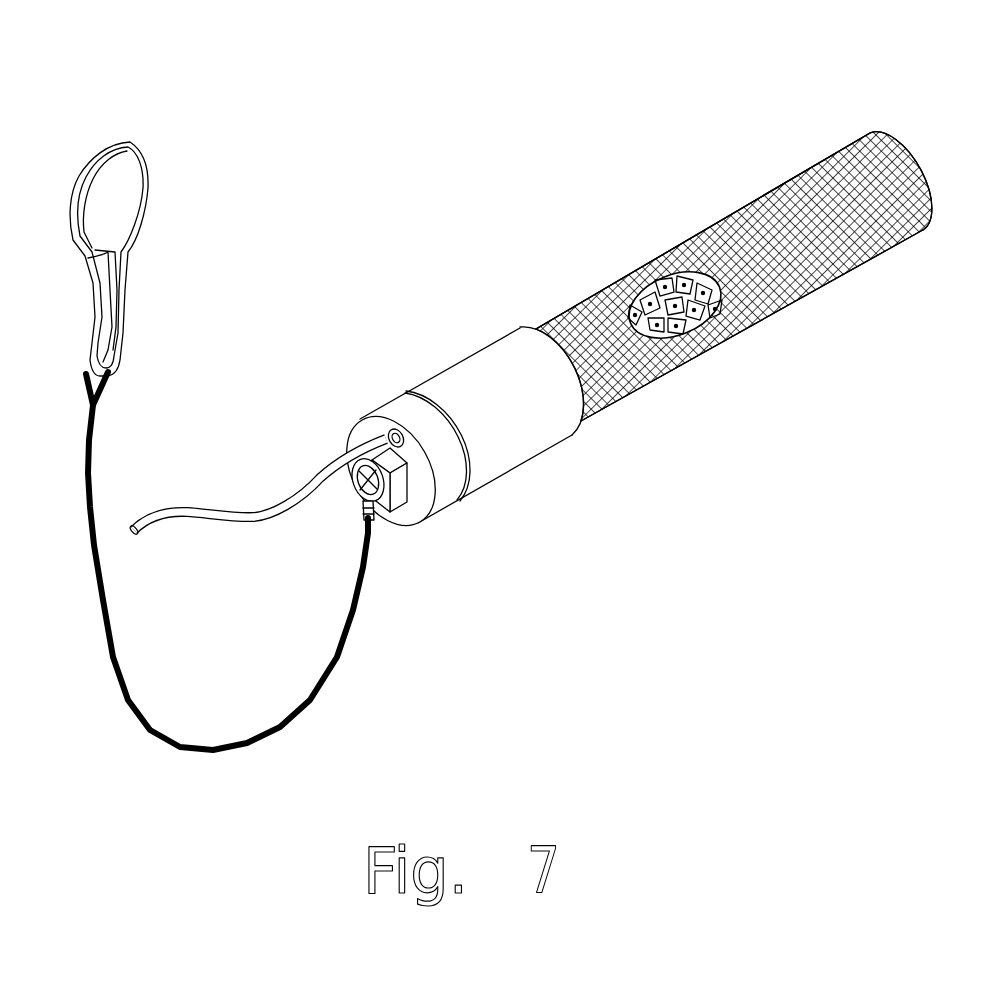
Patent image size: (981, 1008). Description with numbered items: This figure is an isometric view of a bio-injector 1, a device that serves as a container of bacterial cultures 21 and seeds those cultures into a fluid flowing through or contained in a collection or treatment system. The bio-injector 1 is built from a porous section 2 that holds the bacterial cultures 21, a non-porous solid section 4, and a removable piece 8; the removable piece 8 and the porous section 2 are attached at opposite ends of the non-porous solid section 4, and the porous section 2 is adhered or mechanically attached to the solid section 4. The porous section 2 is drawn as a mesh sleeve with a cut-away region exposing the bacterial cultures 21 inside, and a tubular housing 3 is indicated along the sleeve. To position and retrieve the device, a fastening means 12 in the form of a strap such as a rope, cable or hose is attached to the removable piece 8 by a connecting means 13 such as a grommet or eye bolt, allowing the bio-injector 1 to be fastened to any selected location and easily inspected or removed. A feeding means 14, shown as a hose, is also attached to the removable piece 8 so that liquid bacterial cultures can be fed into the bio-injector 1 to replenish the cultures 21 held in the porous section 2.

The bio-injector 1 is at (642, 353).
The porous section 2 is at (803, 297).
The tubular housing 3 is at (538, 323).
The first non-porous solid section 4 is at (537, 457).
The first removable piece 8 is at (440, 517).
The fastening means 12 is at (230, 755).
The connecting means 13 is at (381, 512).
The feeding means 14 is at (293, 488).
The bacterial cultures 21 is at (712, 322).